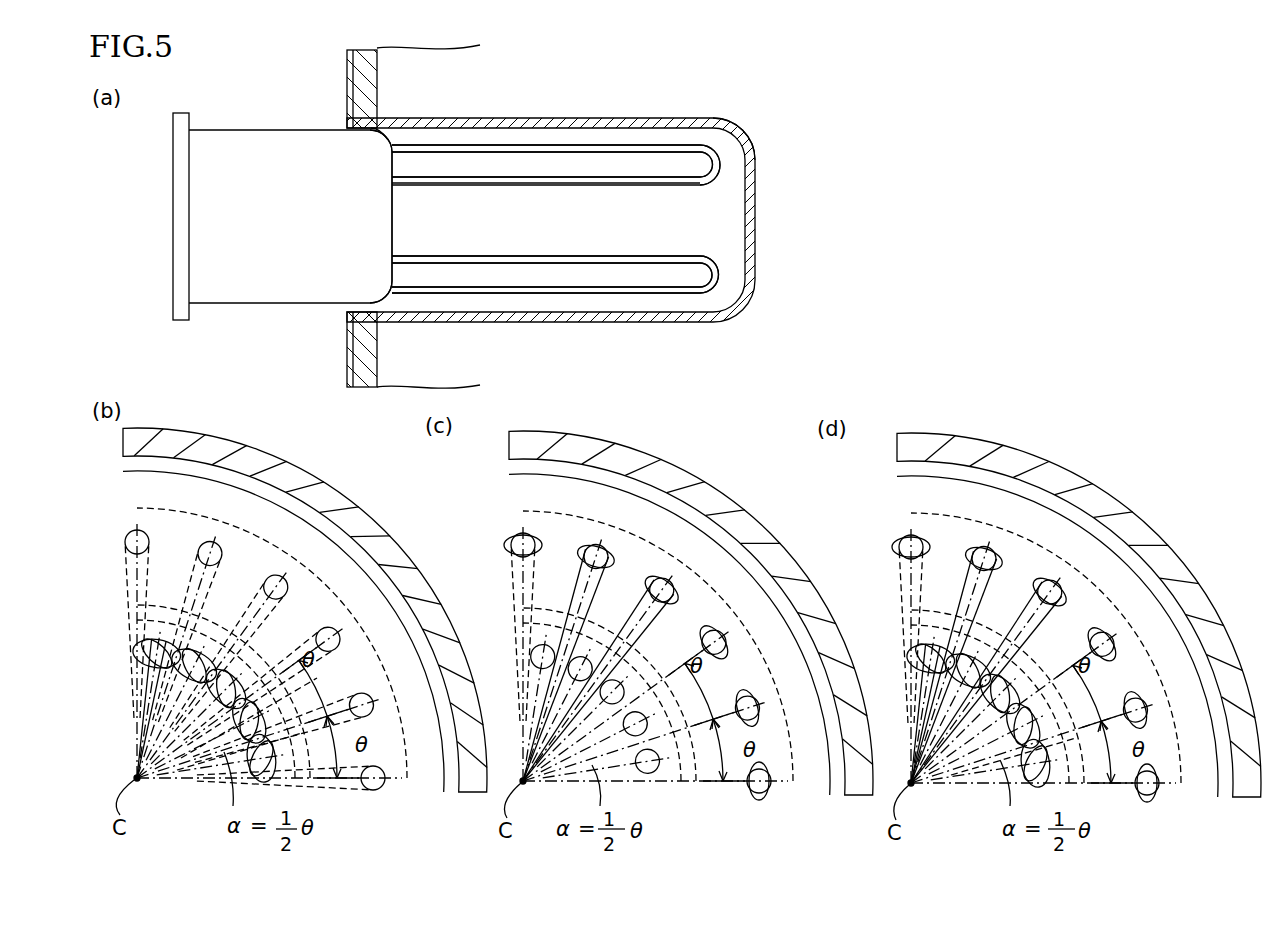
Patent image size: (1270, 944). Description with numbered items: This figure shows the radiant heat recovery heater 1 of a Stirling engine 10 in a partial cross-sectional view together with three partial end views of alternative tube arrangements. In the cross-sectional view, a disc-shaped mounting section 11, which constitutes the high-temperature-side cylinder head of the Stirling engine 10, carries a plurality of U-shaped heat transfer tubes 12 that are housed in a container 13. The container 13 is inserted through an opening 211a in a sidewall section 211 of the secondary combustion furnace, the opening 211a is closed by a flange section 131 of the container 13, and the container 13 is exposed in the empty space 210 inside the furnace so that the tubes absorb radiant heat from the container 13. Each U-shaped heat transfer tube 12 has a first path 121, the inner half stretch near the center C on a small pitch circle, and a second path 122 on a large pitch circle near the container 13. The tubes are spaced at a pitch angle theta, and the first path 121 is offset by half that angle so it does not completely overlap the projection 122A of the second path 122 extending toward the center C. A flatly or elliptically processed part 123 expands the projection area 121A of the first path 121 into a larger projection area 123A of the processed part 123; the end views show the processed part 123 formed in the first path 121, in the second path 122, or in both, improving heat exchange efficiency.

The radiant heat recovery heater 1 is at (738, 125).
The Stirling engine 10 is at (220, 129).
The mounting section 11 is at (375, 213).
The U-shaped heat transfer tube 12 is at (722, 165).
The container 13 is at (638, 118).
The first path 121 is at (700, 257).
The projection area of the first path 121A is at (146, 712).
The second path 122 is at (548, 145).
The projection of the second path 122A is at (585, 550).
The processed part 123 is at (497, 257).
The projection area of the processed part 123A is at (182, 770).
The flange section 131 is at (347, 323).
The empty space 210 is at (478, 93).
The sidewall section 211 is at (347, 72).
The opening 211a is at (372, 131).